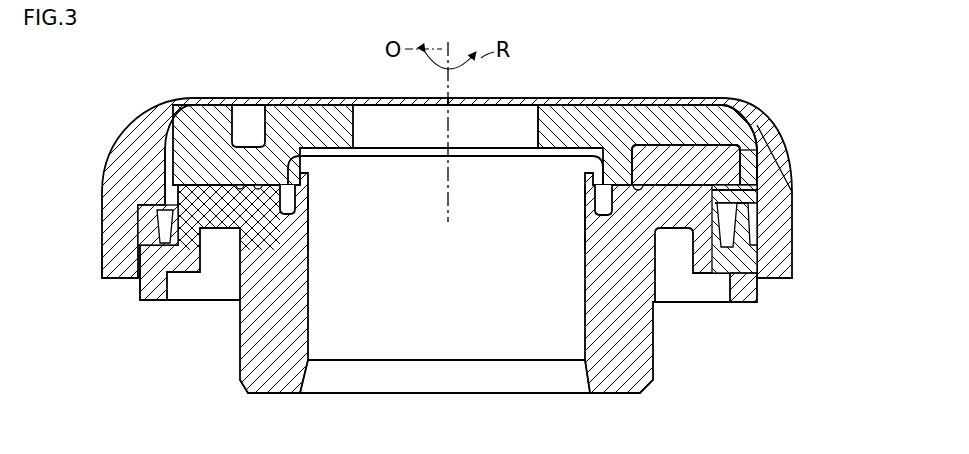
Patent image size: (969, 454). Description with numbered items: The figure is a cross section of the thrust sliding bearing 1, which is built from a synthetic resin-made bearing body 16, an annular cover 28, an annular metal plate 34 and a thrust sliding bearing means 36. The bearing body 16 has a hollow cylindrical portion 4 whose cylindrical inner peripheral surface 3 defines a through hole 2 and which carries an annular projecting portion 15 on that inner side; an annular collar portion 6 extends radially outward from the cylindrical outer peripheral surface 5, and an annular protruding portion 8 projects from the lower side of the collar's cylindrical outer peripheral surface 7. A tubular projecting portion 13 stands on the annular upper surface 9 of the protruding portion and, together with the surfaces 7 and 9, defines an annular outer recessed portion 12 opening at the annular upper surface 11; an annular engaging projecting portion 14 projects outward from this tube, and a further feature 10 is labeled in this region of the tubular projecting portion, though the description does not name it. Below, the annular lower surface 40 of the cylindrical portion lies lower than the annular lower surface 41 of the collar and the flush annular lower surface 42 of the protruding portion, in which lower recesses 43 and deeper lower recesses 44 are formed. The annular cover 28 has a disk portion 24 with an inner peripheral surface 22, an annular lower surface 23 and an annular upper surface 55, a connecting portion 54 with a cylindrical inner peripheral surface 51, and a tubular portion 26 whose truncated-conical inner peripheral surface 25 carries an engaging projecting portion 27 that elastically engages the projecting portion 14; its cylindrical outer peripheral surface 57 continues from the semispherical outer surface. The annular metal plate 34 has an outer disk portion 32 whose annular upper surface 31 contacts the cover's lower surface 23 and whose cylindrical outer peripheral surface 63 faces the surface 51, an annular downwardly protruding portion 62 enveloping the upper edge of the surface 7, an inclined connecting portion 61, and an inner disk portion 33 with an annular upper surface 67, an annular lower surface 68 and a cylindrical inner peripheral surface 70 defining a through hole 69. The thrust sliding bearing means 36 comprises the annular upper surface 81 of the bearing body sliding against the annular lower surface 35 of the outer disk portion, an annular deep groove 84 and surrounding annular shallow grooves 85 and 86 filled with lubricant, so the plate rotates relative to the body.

The thrust sliding bearing 1 is at (126, 125).
The through hole 2 is at (455, 327).
The cylindrical inner peripheral surface 3 is at (583, 320).
The hollow cylindrical portion 4 is at (267, 333).
The cylindrical outer peripheral surface 5 is at (653, 337).
The annular collar portion 6 is at (672, 163).
The cylindrical outer peripheral surface 7 is at (745, 190).
The annular protruding portion 8 is at (147, 292).
The annular upper surface 9 is at (135, 171).
The seal lip 10 is at (730, 222).
The annular upper surface 11 is at (758, 203).
The annular outer recessed portion 12 is at (158, 162).
The tubular projecting portion 13 is at (137, 207).
The annular engaging projecting portion 14 is at (757, 235).
The annular projecting portion 15 is at (343, 152).
The bearing body 16 is at (240, 382).
The inner peripheral surface 22 is at (275, 101).
The annular lower surface 23 is at (235, 145).
The disk portion 24 is at (731, 127).
The inner peripheral surface 25 is at (163, 193).
The tubular portion 26 is at (104, 282).
The engaging projecting portion 27 is at (755, 290).
The annular cover 28 is at (775, 136).
The annular upper surface 31 is at (197, 147).
The outer disk portion 32 is at (727, 128).
The inner disk portion 33 is at (577, 113).
The annular metal plate 34 is at (332, 102).
The annular lower surface 35 is at (244, 140).
The thrust sliding bearing means 36 is at (638, 182).
The annular lower surface 40 is at (373, 395).
The annular lower surface 41 is at (670, 303).
The annular lower surface 42 is at (155, 305).
The lower recesses 43 is at (717, 290).
The lower recesses 44 is at (218, 252).
The cylindrical inner peripheral surface 51 is at (168, 162).
The connecting portion 54 is at (772, 165).
The annular upper surface 55 is at (690, 103).
The cylindrical outer peripheral surface 57 is at (110, 258).
The inclined connecting portion 61 is at (609, 146).
The annular downwardly protruding portion 62 is at (760, 172).
The cylindrical outer peripheral surface 63 is at (158, 150).
The annular upper surface 67 is at (552, 112).
The annular lower surface 68 is at (320, 160).
The through hole 69 is at (410, 130).
The cylindrical inner peripheral surface 70 is at (538, 127).
The annular upper surface 81 is at (231, 186).
The annular deep groove 84 is at (597, 200).
The annular shallow groove 85 is at (305, 240).
The annular shallow groove 86 is at (296, 252).